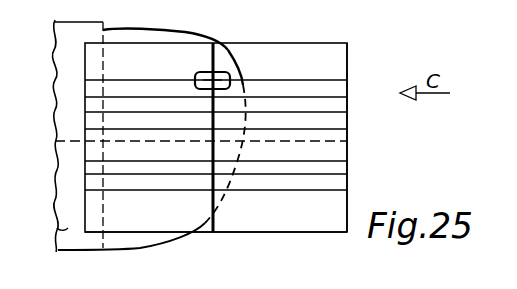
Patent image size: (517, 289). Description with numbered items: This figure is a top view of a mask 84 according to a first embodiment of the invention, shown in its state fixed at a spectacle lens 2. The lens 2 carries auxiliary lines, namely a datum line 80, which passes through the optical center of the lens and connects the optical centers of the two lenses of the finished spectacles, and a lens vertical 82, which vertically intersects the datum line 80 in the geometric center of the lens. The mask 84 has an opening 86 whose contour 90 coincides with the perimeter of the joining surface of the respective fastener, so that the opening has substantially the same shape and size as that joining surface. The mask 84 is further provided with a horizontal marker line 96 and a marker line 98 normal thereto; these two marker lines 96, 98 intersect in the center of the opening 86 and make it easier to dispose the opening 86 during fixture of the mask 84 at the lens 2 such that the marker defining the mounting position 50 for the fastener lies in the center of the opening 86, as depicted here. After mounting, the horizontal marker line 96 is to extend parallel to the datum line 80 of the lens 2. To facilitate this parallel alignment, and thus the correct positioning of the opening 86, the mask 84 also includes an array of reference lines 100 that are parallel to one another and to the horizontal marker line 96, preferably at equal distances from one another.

The spectacle lens 2 is at (55, 228).
The datum line 80 is at (57, 157).
The lens vertical 82 is at (103, 30).
The mask 84 is at (321, 220).
The opening 86 is at (240, 74).
The contour 90 is at (239, 68).
The horizontal marker line 96 is at (320, 80).
The marker line 98 is at (214, 225).
The reference lines 100 is at (333, 127).
The mounting position 50 is at (217, 71).